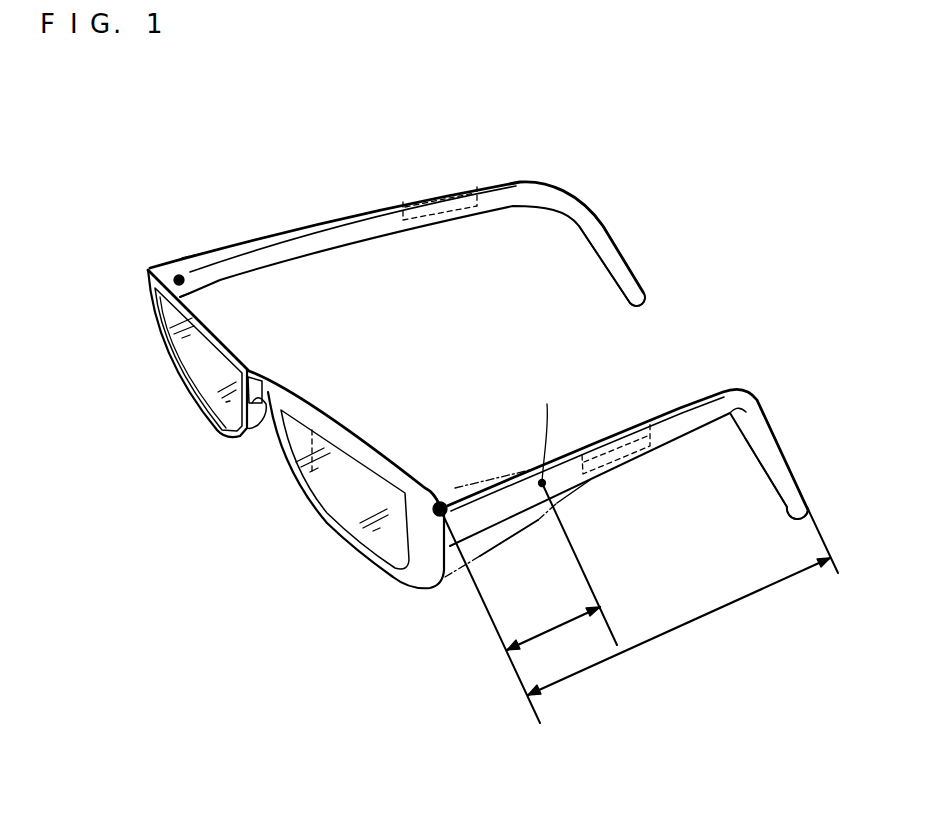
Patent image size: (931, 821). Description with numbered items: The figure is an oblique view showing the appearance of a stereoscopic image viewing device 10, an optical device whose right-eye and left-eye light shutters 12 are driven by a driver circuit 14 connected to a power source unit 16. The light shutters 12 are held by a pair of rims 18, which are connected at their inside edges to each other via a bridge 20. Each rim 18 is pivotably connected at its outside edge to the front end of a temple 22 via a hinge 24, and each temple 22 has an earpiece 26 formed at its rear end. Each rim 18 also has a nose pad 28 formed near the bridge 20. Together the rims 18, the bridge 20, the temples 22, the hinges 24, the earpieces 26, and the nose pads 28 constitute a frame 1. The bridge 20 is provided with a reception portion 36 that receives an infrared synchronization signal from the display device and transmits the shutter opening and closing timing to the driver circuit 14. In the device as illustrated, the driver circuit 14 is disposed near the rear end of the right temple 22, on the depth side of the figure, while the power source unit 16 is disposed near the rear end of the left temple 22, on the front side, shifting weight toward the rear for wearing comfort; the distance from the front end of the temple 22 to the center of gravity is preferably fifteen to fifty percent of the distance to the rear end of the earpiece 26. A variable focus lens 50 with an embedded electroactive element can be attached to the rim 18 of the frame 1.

The frame 1 is at (502, 162).
The viewing device 10 is at (633, 198).
The light shutters 12 is at (197, 360).
The driver circuit 14 is at (419, 205).
The power source unit 16 is at (599, 457).
The rims 18 is at (281, 262).
The bridge 20 is at (257, 371).
The temple 22 is at (312, 222).
The hinge 24 is at (178, 276).
The earpiece 26 is at (629, 294).
The nose pad 28 is at (333, 433).
The reception portion 36 is at (263, 440).
The lens 50 is at (229, 244).